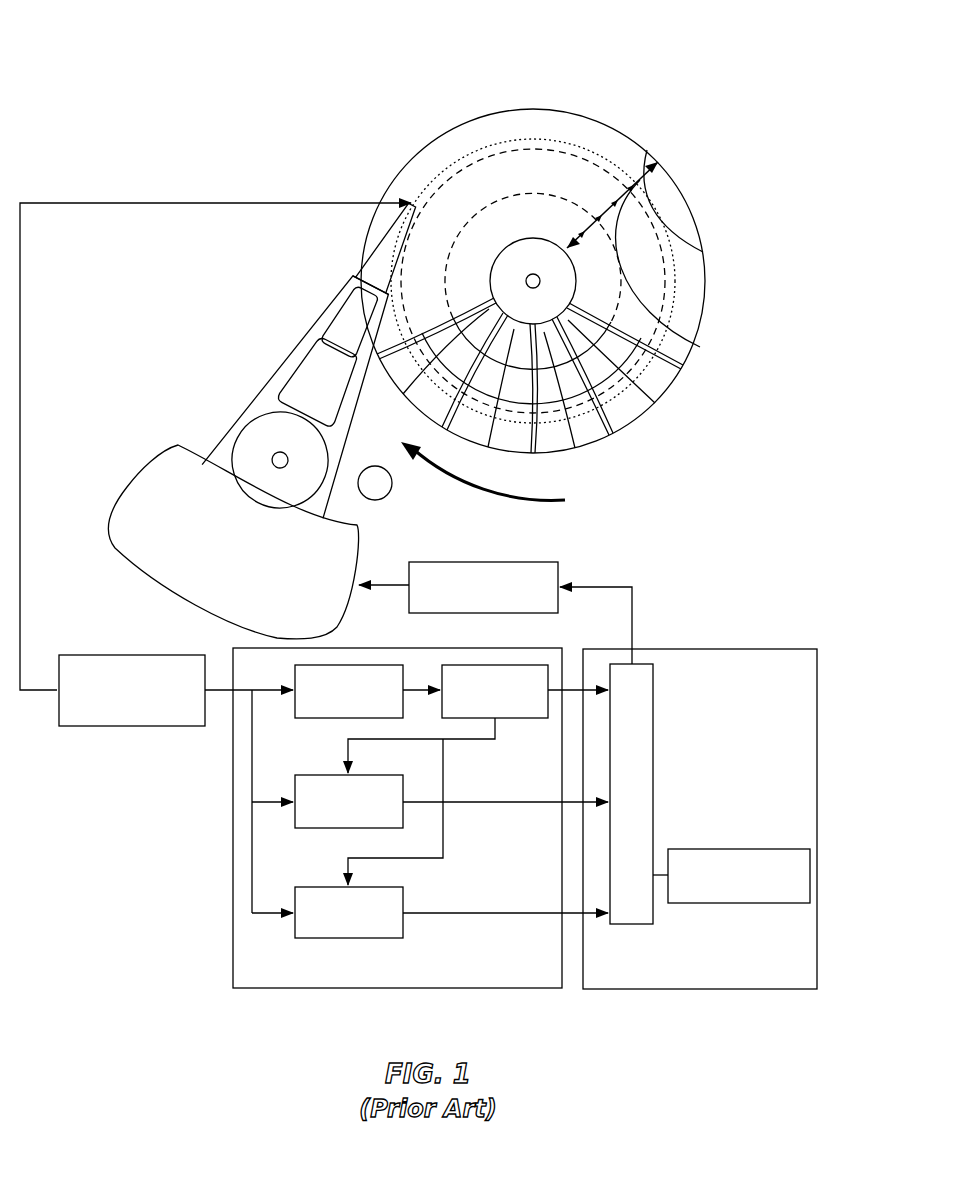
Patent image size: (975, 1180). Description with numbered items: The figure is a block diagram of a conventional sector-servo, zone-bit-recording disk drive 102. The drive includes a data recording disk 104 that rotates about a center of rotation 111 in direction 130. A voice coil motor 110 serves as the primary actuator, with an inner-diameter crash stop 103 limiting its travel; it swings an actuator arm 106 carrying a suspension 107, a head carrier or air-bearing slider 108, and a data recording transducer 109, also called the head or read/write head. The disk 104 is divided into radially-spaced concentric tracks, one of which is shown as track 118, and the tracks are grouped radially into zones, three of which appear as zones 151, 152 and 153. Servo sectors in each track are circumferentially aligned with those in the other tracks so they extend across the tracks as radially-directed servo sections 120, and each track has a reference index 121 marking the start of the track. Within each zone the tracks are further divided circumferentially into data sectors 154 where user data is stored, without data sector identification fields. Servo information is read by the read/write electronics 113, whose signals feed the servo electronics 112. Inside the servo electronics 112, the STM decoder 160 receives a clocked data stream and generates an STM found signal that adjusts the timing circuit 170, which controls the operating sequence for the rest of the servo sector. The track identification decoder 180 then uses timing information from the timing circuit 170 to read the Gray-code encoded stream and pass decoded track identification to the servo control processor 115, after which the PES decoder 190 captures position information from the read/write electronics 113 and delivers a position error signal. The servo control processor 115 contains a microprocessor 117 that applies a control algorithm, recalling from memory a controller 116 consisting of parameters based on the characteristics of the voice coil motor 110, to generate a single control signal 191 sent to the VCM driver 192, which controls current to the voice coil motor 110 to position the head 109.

The disk drive 102 is at (118, 38).
The inner-diameter crash stop 103 is at (377, 500).
The data recording disk 104 is at (498, 115).
The actuator arm 106 is at (336, 303).
The suspension 107 is at (380, 255).
The head carrier or air-bearing slider 108 is at (412, 200).
The data recording transducer 109 is at (415, 200).
The voice coil motor 110 is at (173, 452).
The center of rotation 111 is at (532, 274).
The servo electronics 112 is at (233, 778).
The read/write electronics 113 is at (106, 655).
The servo control processor 115 is at (725, 649).
The controller 116 is at (745, 849).
The microprocessor 117 is at (653, 700).
The track 118 is at (437, 168).
The servo sections 120 is at (443, 425).
The reference index 121 is at (683, 367).
The direction of rotation 130 is at (545, 495).
The zone 151 is at (703, 252).
The zone 152 is at (703, 322).
The zone 153 is at (578, 228).
The data sectors 154 is at (652, 385).
The STM decoder 160 is at (312, 718).
The timing circuit 170 is at (500, 718).
The track identification decoder 180 is at (312, 828).
The PES decoder 190 is at (295, 925).
The control signal 191 is at (632, 606).
The VCM driver 192 is at (500, 562).